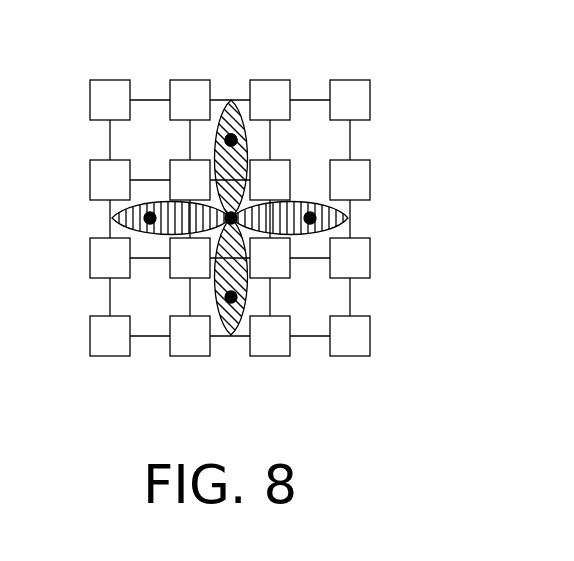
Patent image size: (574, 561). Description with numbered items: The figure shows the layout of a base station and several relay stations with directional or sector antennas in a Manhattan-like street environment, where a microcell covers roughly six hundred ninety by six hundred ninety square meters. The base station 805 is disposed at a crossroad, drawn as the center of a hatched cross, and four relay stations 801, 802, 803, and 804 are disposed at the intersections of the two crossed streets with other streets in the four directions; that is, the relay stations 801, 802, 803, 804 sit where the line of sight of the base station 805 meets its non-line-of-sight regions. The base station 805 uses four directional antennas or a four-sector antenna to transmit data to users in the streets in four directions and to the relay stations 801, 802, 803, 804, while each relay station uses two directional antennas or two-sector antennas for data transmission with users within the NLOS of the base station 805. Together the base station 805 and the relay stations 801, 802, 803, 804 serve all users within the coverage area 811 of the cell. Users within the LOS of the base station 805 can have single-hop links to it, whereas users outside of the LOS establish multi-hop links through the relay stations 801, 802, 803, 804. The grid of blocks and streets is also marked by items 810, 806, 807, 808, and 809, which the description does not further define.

The unit cell 810 is at (108, 92).
The base station 805 is at (217, 168).
The relay station 801 is at (231, 136).
The coverage area 811 is at (308, 100).
The first dashed line 806 is at (248, 141).
The relay station 804 is at (115, 213).
The relay station 802 is at (312, 216).
The right hatched region 808 is at (309, 228).
The lower point 807 is at (248, 294).
The left hatched region 809 is at (151, 228).
The relay station 803 is at (228, 318).